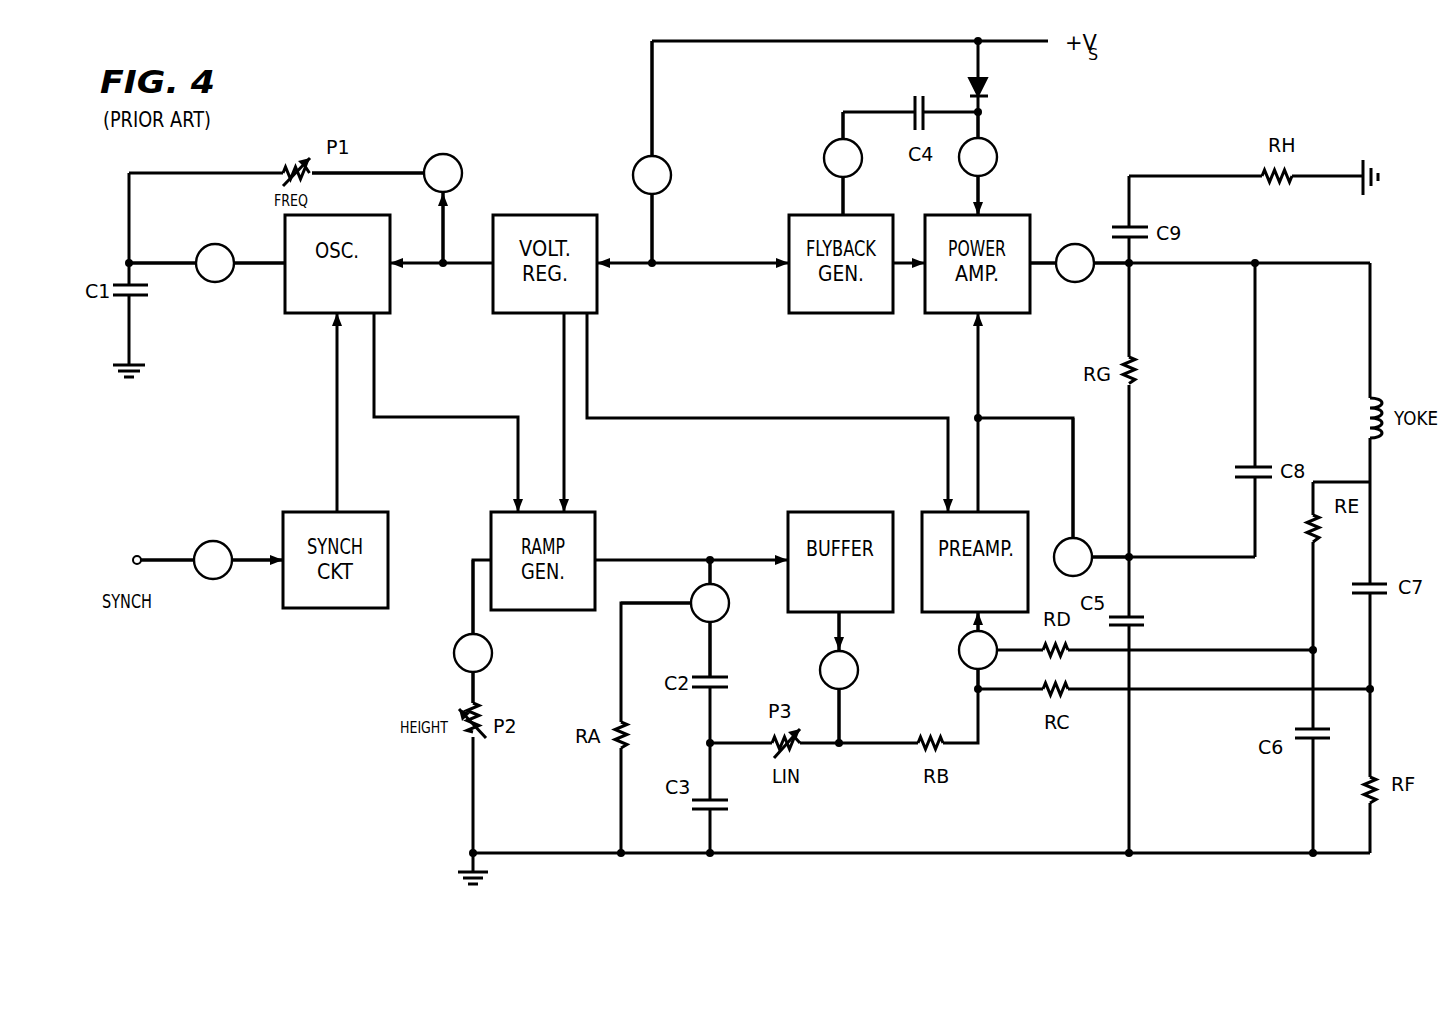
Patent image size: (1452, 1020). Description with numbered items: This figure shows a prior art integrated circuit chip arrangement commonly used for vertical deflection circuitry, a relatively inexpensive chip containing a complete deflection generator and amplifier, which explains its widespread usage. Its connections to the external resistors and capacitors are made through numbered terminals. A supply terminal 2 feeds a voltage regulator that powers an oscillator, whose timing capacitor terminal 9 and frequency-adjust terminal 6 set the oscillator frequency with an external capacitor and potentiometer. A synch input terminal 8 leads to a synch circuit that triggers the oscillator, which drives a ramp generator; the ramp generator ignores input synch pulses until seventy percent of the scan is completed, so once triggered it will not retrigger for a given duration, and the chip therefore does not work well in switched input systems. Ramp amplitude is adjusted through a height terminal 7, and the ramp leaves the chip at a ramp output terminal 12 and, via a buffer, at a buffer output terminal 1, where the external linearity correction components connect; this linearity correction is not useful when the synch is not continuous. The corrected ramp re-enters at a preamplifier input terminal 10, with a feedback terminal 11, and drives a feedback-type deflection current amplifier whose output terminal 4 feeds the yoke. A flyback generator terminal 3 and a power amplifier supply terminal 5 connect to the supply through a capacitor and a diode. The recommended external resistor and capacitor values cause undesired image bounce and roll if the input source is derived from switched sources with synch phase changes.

The buffer output pin 1 is at (839, 677).
The voltage regulator supply pin 2 is at (652, 152).
The flyback generator pin 3 is at (843, 163).
The power amplifier output pin 4 is at (1079, 263).
The power amplifier supply pin 5 is at (978, 163).
The oscillator frequency adjust pin 6 is at (387, 208).
The ramp generator height adjust pin 7 is at (473, 631).
The synch input pin 8 is at (212, 560).
The oscillator timing capacitor pin 9 is at (207, 263).
The preamplifier input pin 10 is at (978, 650).
The preamplifier feedback pin 11 is at (1091, 497).
The ramp generator output pin 12 is at (675, 618).